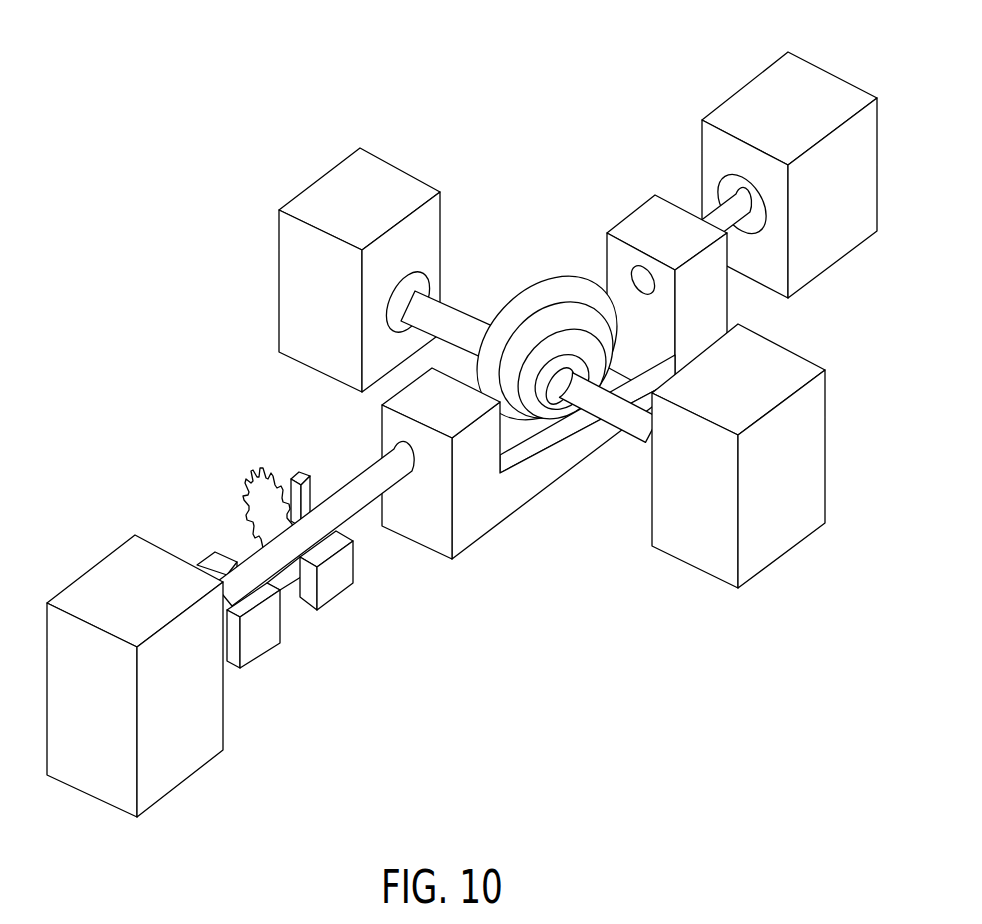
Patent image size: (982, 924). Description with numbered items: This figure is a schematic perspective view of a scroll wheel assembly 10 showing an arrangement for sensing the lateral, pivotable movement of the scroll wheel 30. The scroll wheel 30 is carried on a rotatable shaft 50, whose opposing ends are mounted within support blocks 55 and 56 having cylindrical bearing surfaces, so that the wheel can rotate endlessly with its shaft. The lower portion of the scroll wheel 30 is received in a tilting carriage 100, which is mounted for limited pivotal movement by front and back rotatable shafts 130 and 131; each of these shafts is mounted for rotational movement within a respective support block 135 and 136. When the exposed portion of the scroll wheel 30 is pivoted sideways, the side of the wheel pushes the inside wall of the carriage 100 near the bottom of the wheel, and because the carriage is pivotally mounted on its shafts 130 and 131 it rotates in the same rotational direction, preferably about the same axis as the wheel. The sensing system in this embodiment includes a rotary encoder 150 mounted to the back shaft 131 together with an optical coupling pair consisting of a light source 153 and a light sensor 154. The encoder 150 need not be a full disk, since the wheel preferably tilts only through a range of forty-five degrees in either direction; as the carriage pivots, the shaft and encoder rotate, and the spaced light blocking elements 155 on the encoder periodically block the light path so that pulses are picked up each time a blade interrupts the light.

The scroll wheel assembly 10 is at (469, 72).
The scroll wheel 30 is at (546, 285).
The rotatable shaft 50 is at (455, 303).
The support block 55 is at (399, 176).
The support block 56 is at (783, 548).
The tilting carriage 100 is at (629, 223).
The front rotatable shaft 130 is at (727, 240).
The back rotatable shaft 131 is at (370, 512).
The support block 135 is at (835, 255).
The support block 136 is at (214, 730).
The rotary encoder 150 is at (263, 505).
The light source 153 is at (334, 588).
The light sensor 154 is at (262, 644).
The light blocking elements 155 is at (278, 475).